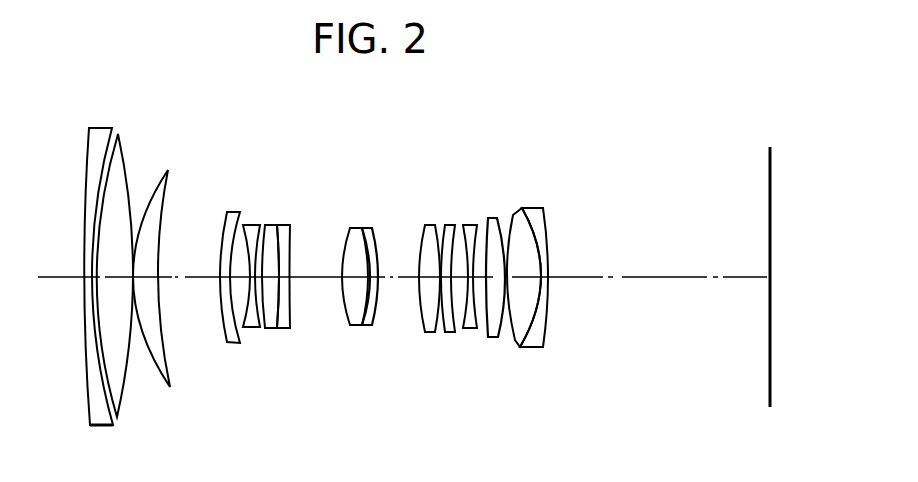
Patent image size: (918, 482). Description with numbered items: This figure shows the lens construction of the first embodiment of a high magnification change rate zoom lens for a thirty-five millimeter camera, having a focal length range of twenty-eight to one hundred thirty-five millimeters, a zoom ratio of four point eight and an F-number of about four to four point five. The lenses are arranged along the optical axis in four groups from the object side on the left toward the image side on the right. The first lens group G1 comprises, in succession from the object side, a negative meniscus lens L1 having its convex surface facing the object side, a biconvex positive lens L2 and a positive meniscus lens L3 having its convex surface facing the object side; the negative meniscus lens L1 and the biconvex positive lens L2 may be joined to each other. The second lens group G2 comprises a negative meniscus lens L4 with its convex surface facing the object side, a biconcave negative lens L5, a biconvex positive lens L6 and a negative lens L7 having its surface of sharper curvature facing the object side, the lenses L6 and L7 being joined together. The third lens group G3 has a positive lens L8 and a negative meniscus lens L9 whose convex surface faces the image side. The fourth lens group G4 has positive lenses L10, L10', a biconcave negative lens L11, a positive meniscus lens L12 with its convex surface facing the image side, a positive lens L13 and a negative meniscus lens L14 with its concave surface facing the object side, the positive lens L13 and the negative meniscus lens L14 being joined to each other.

The first lens group G1 is at (190, 82).
The second lens group G2 is at (305, 157).
The third lens group G3 is at (378, 157).
The fourth lens group G4 is at (615, 157).
The negative meniscus lens L1 is at (97, 128).
The biconvex positive lens L2 is at (118, 133).
The positive meniscus lens L3 is at (168, 170).
The negative meniscus lens L4 is at (228, 214).
The biconcave negative lens L5 is at (250, 220).
The biconvex positive lens L6 is at (270, 222).
The negative lens L7 is at (283, 222).
The positive lens L8 is at (353, 232).
The negative meniscus lens L9 is at (368, 227).
The positive lens L10 is at (412, 251).
The positive lens L10' is at (440, 251).
The biconcave negative lens L11 is at (470, 223).
The positive meniscus lens L12 is at (493, 218).
The positive lens L13 is at (513, 218).
The negative meniscus lens L14 is at (543, 208).